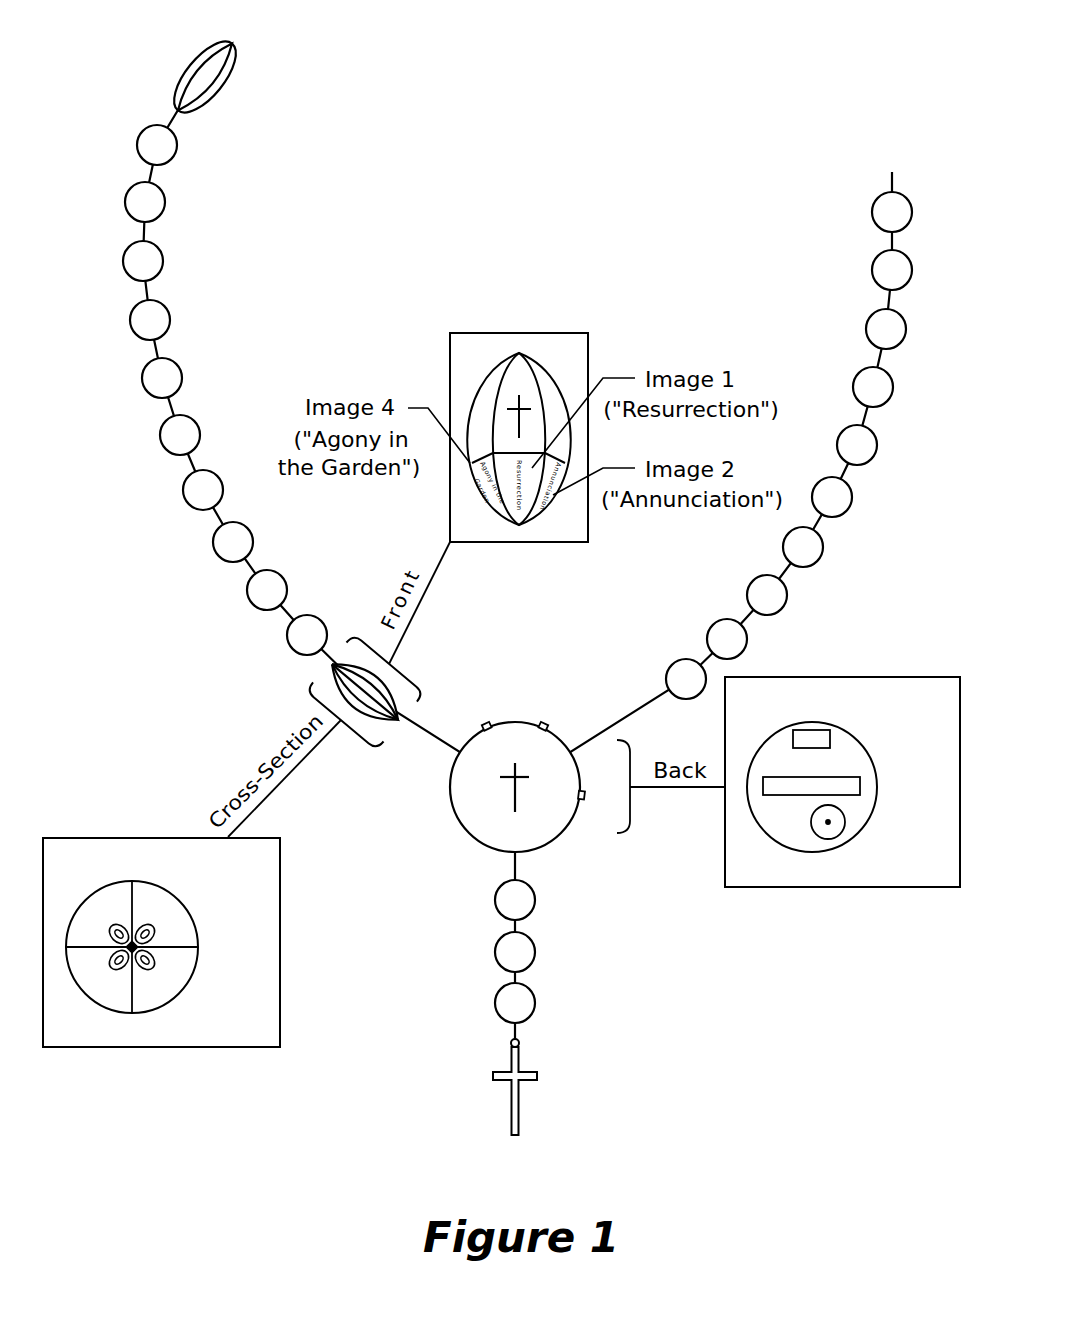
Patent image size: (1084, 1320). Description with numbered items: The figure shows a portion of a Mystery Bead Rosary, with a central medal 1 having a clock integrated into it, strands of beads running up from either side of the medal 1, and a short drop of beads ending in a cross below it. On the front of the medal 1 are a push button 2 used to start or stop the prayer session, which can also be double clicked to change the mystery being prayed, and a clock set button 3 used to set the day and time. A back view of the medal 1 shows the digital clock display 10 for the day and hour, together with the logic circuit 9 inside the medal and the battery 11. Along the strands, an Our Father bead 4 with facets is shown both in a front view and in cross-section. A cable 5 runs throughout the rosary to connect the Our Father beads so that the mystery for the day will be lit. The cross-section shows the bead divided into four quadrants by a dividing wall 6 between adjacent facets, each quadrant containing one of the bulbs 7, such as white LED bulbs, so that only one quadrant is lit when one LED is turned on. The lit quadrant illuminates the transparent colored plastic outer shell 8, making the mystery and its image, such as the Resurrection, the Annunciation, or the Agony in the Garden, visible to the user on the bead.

The medal 1 is at (515, 787).
The push button 2 is at (515, 709).
The clock set button 3 is at (595, 808).
The Our Father bead 4 is at (365, 697).
The cable 5 is at (183, 402).
The dividing wall 6 is at (135, 888).
The bulbs 7 is at (162, 930).
The transparent colored plastic outer shell 8 is at (172, 1000).
The logic circuit 9 is at (820, 723).
The digital clock display 10 is at (867, 785).
The battery 11 is at (853, 830).